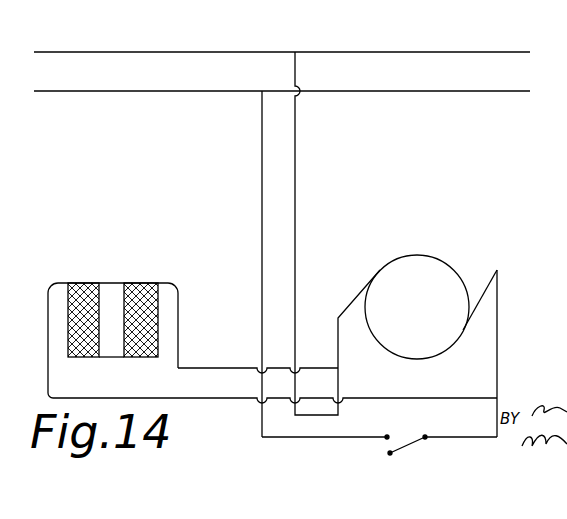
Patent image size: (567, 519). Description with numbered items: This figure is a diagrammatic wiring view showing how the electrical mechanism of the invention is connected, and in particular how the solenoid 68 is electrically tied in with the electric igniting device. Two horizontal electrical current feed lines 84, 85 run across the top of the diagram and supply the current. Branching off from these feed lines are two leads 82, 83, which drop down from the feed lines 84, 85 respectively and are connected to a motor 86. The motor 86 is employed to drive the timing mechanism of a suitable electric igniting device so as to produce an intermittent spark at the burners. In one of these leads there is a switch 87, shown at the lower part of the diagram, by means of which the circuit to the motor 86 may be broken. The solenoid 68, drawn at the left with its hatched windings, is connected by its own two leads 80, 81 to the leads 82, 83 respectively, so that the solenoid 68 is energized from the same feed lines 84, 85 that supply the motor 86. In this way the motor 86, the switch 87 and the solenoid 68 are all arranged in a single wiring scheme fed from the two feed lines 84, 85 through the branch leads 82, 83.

The solenoid 68 is at (143, 290).
The lead 80 is at (48, 318).
The lead 81 is at (178, 321).
The lead 82 is at (262, 174).
The lead 83 is at (295, 174).
The electrical current feed line 84 is at (172, 91).
The electrical current feed line 85 is at (403, 52).
The motor 86 is at (417, 307).
The switch 87 is at (408, 446).